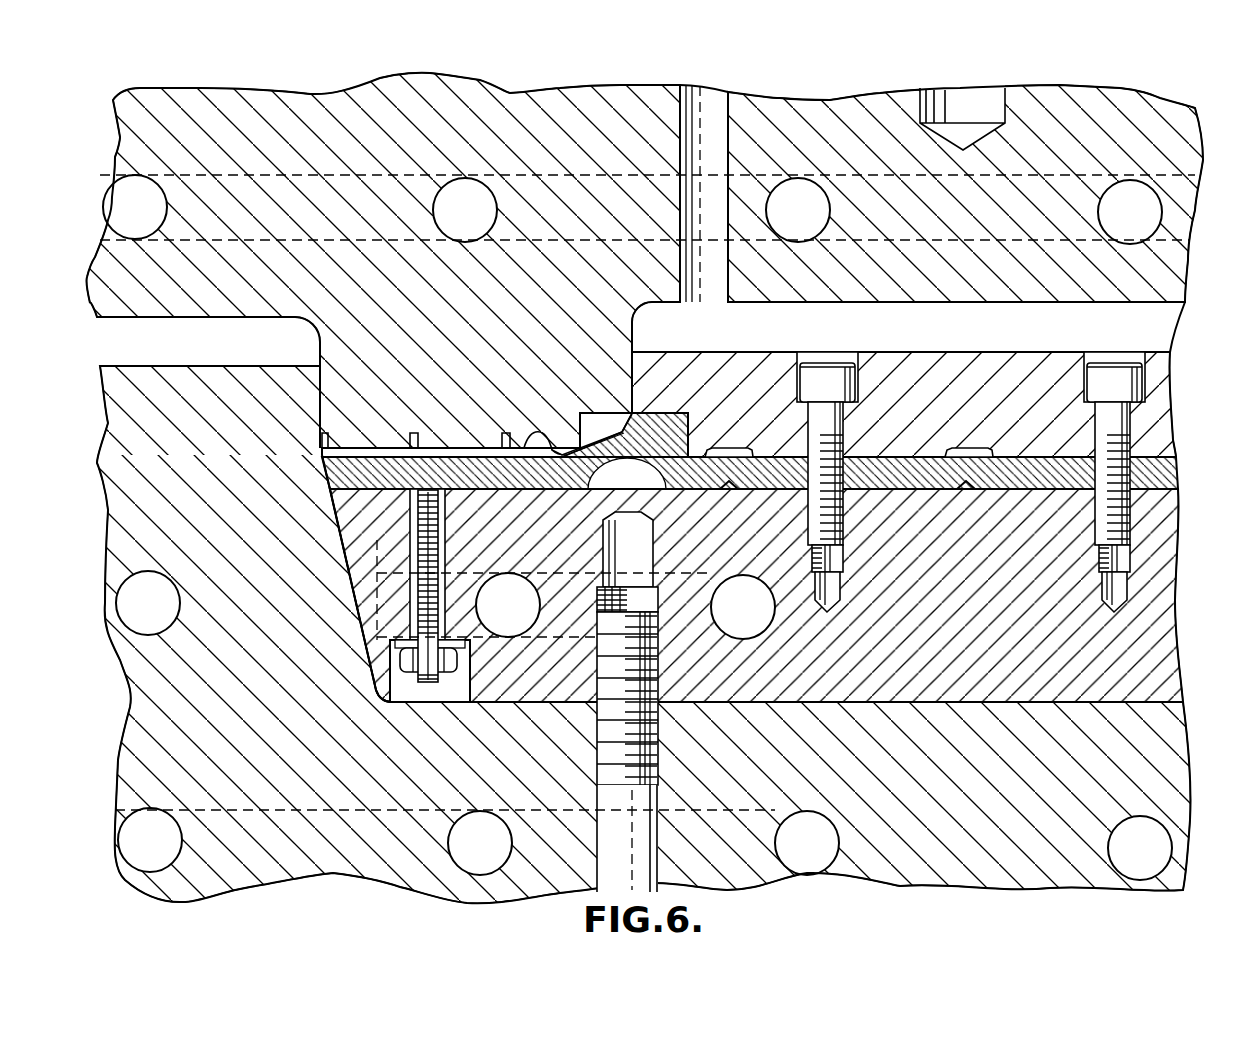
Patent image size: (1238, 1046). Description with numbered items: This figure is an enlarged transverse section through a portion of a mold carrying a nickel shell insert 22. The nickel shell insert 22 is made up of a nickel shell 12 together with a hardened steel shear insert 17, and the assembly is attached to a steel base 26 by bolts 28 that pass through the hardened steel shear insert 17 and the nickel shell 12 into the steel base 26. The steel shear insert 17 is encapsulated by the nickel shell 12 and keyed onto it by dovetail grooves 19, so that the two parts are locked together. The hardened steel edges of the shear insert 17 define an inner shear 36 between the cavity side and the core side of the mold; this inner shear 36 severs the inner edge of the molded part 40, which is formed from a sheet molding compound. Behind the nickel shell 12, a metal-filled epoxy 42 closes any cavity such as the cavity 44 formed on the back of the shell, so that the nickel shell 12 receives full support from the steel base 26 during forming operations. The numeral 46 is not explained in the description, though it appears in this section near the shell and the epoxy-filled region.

The nickel shell 12 is at (509, 487).
The hardened steel shear insert 17 is at (657, 352).
The dovetail grooves 19 is at (745, 447).
The nickel shell insert 22 is at (470, 719).
The steel base 26 is at (957, 624).
The bolts 28 is at (845, 505).
The inner shear 36 is at (632, 372).
The molded part 40 is at (476, 440).
The metal-filled epoxy 42 is at (663, 490).
The cavity 44 is at (578, 490).
The groove 46 is at (730, 490).